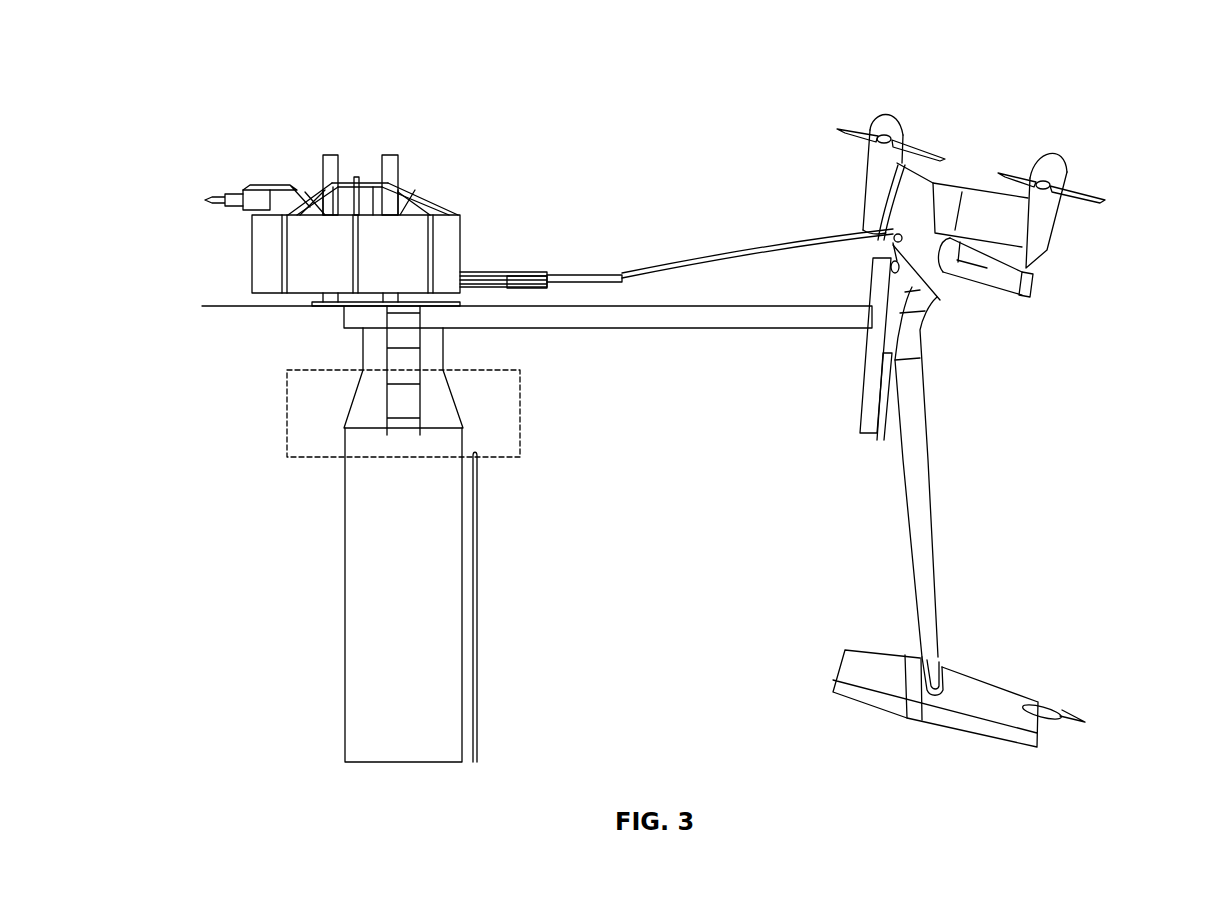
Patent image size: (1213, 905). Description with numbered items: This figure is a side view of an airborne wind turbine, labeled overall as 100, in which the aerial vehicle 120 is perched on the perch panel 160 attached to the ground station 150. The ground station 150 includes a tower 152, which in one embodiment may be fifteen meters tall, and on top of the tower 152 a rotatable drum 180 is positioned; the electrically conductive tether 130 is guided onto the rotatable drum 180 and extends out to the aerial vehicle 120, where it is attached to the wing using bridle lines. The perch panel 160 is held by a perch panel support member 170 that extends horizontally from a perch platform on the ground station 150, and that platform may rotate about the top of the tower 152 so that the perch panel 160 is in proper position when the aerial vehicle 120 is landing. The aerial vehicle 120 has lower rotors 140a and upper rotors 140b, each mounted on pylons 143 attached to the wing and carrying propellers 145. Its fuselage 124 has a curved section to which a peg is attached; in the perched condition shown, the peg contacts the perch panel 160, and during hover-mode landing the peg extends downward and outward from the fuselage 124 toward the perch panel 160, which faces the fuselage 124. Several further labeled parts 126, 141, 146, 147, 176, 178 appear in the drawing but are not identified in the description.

The unmanned aerial system 100 is at (663, 100).
The aerial vehicle 120 is at (1073, 98).
The fuselage 124 is at (922, 528).
The pontoon / float 126 is at (965, 698).
The electrically conductive tether 130 is at (727, 252).
The lower rotors 140a is at (887, 120).
The upper rotors 140b is at (1060, 168).
The wing 141 is at (1007, 232).
The pylons 143 is at (898, 207).
The propellers 145 is at (913, 140).
The fuselage 146 is at (955, 288).
The strut brace 147 is at (882, 435).
The ground station 150 is at (285, 135).
The tower 152 is at (372, 645).
The perch panel 160 is at (567, 272).
The perch panel support member 170 is at (634, 318).
The post 176 is at (865, 395).
The tether attachment 178 is at (890, 255).
The rotatable drum 180 is at (268, 258).